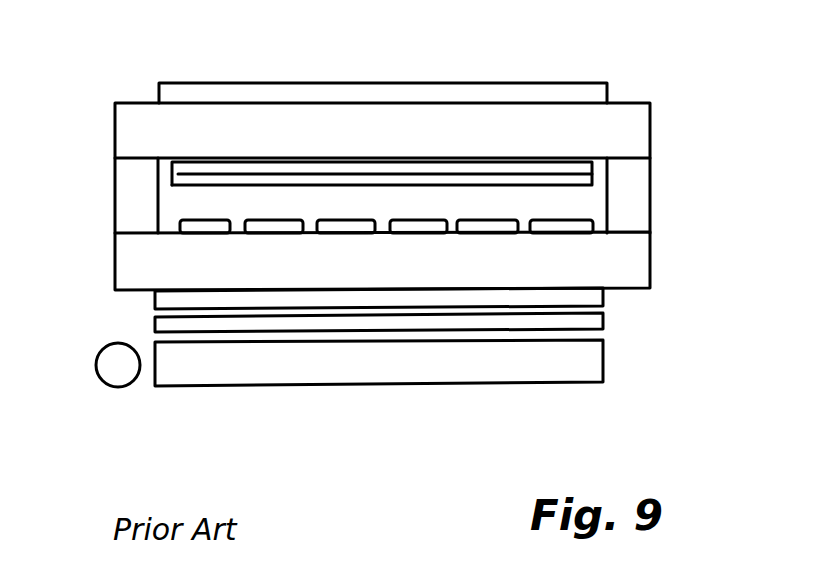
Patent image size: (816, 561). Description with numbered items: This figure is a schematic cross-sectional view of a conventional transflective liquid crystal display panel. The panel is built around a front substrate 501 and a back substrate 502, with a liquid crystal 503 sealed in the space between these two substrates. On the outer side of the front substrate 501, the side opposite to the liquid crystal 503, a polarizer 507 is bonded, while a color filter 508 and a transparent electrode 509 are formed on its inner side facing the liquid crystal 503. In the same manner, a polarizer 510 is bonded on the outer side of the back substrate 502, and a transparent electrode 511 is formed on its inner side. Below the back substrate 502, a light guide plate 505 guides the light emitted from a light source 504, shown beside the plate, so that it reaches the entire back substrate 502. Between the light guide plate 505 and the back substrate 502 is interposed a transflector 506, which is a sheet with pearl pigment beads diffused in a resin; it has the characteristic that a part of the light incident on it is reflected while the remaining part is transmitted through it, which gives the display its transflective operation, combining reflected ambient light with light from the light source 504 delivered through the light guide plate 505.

The front substrate 501 is at (650, 127).
The back substrate 502 is at (650, 258).
The liquid crystal 503 is at (577, 197).
The light source 504 is at (128, 380).
The light guide plate 505 is at (603, 360).
The transflector 506 is at (603, 319).
The polarizer 507 is at (600, 83).
The color filter 508 is at (233, 165).
The transparent electrode 509 is at (275, 180).
The polarizer 510 is at (155, 296).
The transparent electrode 511 is at (183, 227).